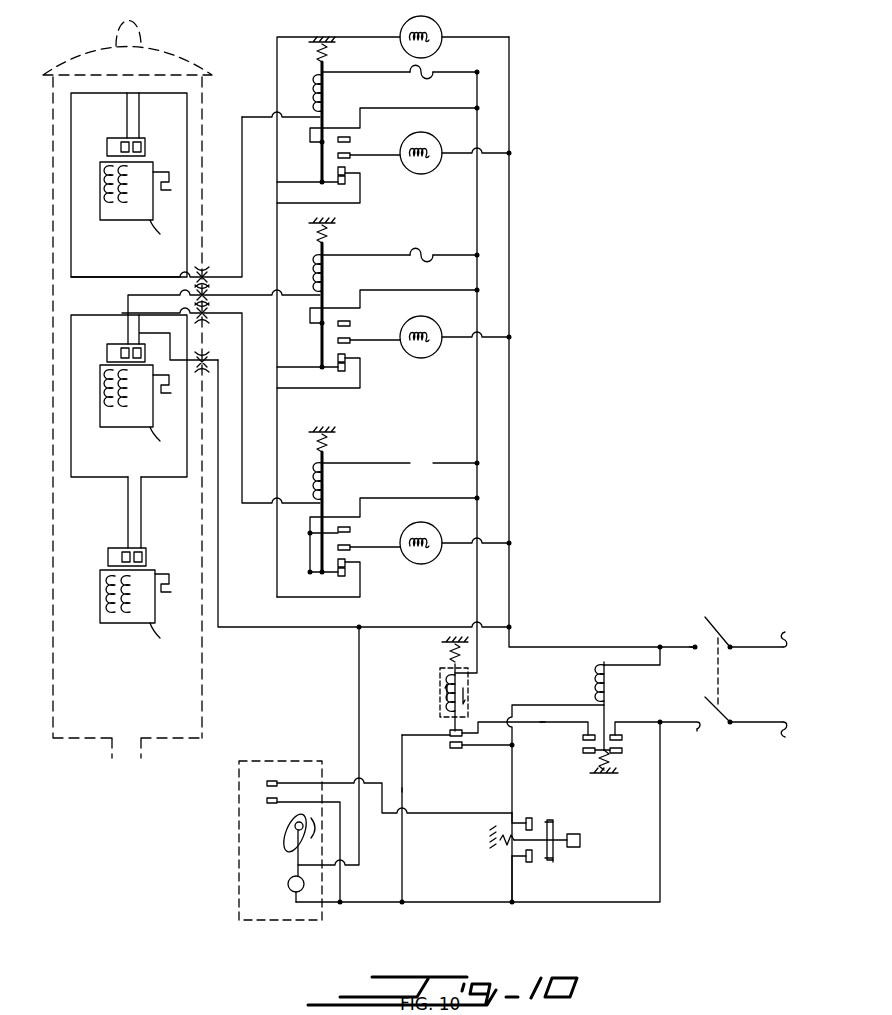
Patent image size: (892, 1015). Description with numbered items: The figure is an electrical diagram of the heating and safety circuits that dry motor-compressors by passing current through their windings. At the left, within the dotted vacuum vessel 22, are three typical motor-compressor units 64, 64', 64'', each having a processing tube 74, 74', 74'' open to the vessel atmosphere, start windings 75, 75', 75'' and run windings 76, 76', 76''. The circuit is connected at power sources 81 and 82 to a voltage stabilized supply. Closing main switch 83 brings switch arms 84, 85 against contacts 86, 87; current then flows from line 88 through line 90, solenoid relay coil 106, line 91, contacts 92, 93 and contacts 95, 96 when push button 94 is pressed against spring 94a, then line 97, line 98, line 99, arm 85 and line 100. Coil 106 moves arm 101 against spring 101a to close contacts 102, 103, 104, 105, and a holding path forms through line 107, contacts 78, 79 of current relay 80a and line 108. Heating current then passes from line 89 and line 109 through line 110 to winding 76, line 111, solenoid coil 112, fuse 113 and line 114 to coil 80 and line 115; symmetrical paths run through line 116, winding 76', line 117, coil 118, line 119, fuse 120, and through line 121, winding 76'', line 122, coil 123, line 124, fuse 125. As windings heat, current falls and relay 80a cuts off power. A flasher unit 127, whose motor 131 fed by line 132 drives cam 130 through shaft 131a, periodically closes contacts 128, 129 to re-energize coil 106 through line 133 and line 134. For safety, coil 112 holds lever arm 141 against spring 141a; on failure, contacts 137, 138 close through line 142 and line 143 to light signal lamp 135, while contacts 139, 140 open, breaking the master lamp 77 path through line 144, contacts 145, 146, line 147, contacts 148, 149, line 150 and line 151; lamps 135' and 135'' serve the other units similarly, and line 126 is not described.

The vacuum vessel 22 is at (222, 678).
The line 122 is at (96, 97).
The start motor-winding 75'' is at (112, 204).
The run motor-winding 76'' is at (153, 194).
The processing tube 74'' is at (170, 188).
The motor-compressor unit 64'' is at (162, 233).
The line 110 is at (186, 448).
The line 116 is at (178, 339).
The start motor-winding 75' is at (112, 408).
The run motor-winding 76' is at (152, 399).
The processing tube 74' is at (169, 392).
The motor-compressor unit 64' is at (161, 439).
The start motor-winding 75 is at (117, 567).
The run motor-winding 76 is at (160, 596).
The processing tube 74 is at (179, 577).
The motor-compressor unit 64 is at (167, 636).
The line 121 is at (185, 256).
The line 117 is at (128, 333).
The line 111 is at (122, 313).
The line 109 is at (218, 565).
The line 144 is at (345, 37).
The line 89 is at (509, 440).
The line 114 is at (477, 412).
The master signal light 77 is at (432, 22).
The solenoid coil 123 is at (322, 104).
The line 124 is at (377, 72).
The fuse 125 is at (426, 72).
The contact 145 is at (377, 156).
The signal light 135'' is at (431, 145).
The contact 146 is at (345, 176).
The line 147 is at (360, 190).
The solenoid coil 118 is at (322, 287).
The line 119 is at (373, 255).
The fuse 120 is at (426, 255).
The contact 148 is at (377, 340).
The signal light 135' is at (431, 329).
The contact 149 is at (345, 362).
The line 150 is at (360, 375).
The spring 141a is at (324, 446).
The solenoid coil 112 is at (324, 494).
The fuse 113 is at (426, 463).
The line 142 is at (410, 498).
The lever arm 141 is at (322, 514).
The line 143 is at (310, 536).
The line 151 is at (310, 571).
The contact 137 is at (350, 530).
The contact 138 is at (350, 548).
The signal light 135 is at (431, 535).
The contact 139 is at (352, 566).
The contact 140 is at (340, 580).
The current relay 80a is at (446, 675).
The coil 80 is at (446, 700).
The contact 79 is at (450, 733).
The conductor 126 is at (462, 732).
The contact 78 is at (452, 748).
The line 107 is at (478, 746).
The line 90 is at (612, 666).
The solenoid relay coil 106 is at (608, 692).
The line 91 is at (548, 706).
The line 115 is at (540, 722).
The arm 101 is at (612, 724).
The contact 102 is at (583, 737).
The contact 103 is at (622, 738).
The contact 104 is at (588, 753).
The contact 105 is at (622, 750).
The spring 101a is at (624, 776).
The contact 86 is at (695, 646).
The switch arm 84 is at (716, 620).
The line 88 is at (755, 646).
The power source 81 is at (788, 628).
The main switch 83 is at (718, 674).
The switch arm 85 is at (728, 716).
The line 100 is at (746, 728).
The power source 82 is at (787, 746).
The line 99 is at (660, 722).
The contact 87 is at (697, 731).
The line 98 is at (432, 904).
The line 108 is at (402, 790).
The line 133 is at (295, 783).
The contact 92 is at (528, 818).
The contact 93 is at (531, 866).
The contact 95 is at (550, 820).
The spring 94a is at (505, 848).
The push button 94 is at (582, 838).
The contact 96 is at (555, 864).
The line 97 is at (512, 880).
The line 132 is at (359, 729).
The flasher unit 127 is at (239, 853).
The contact 128 is at (267, 784).
The contact 129 is at (267, 800).
The cam 130 is at (283, 834).
The shaft 131a is at (296, 852).
The motor 131 is at (288, 882).
The line 134 is at (352, 903).